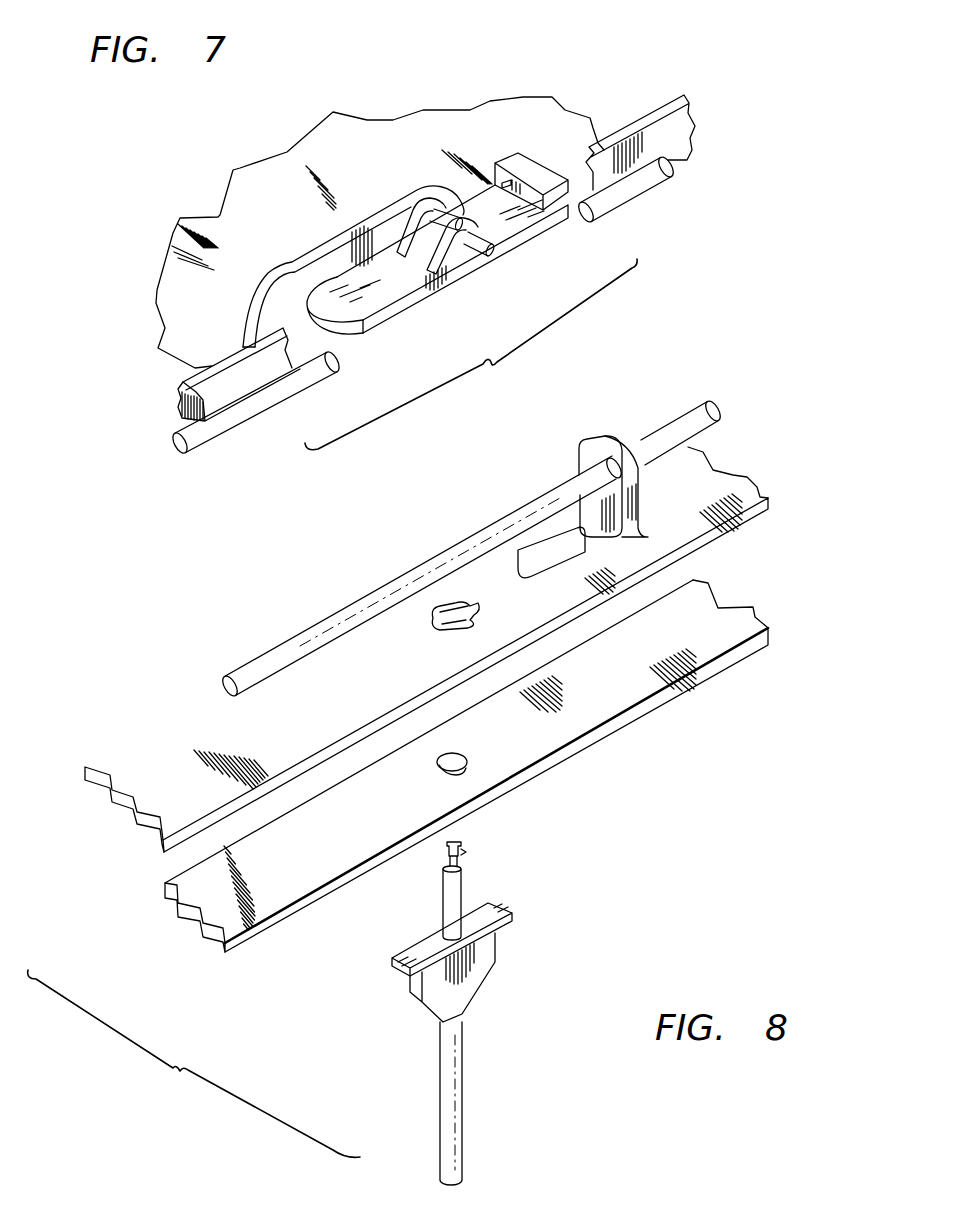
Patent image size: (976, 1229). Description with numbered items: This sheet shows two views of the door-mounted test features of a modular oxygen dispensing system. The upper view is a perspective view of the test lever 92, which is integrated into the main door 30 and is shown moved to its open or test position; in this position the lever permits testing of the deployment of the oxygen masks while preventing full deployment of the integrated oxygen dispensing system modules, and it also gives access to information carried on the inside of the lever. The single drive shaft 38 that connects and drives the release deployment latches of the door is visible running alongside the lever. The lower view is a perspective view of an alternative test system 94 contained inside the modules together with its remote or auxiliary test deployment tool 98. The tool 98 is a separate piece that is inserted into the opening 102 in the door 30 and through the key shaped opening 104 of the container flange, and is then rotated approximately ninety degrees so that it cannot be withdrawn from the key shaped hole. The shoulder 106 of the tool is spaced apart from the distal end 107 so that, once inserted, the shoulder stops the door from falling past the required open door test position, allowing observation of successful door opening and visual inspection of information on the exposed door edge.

In FIG. 7, the main door 30 is at (393, 143).
In FIG. 8, the main door 30 is at (677, 690).
In FIG. 7, the test lever 92 is at (513, 152).
In FIG. 8, the drive shaft 38 is at (500, 522).
In FIG. 8, the test system 94 is at (743, 585).
In FIG. 8, the key shaped opening 104 is at (445, 608).
In FIG. 8, the opening 102 is at (467, 757).
In FIG. 8, the distal end 107 is at (457, 832).
In FIG. 8, the shoulder 106 is at (430, 948).
In FIG. 8, the test deployment tool 98 is at (463, 990).